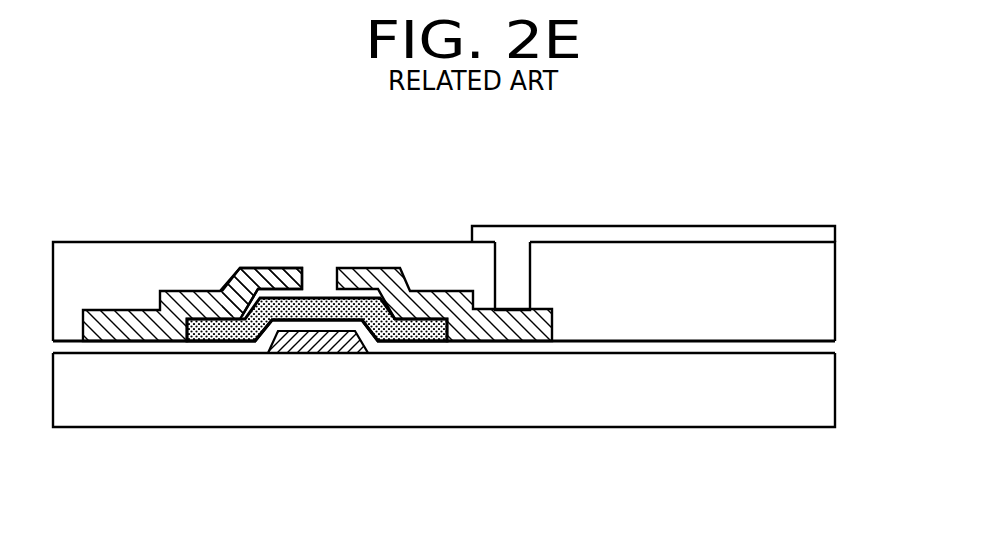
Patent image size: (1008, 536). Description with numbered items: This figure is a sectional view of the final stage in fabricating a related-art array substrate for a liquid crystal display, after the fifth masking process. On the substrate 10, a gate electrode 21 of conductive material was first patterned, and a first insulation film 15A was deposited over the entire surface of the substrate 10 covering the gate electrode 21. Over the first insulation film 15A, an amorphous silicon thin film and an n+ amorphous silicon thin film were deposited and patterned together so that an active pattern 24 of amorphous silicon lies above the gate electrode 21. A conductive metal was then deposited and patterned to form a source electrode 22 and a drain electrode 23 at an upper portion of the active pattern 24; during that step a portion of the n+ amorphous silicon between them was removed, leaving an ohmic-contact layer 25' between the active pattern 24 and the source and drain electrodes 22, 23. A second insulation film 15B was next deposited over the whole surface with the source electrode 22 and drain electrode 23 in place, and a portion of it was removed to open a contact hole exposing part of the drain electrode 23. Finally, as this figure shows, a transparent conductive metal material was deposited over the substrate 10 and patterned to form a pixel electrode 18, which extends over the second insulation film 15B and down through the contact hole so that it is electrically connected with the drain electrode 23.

The substrate 10 is at (834, 390).
The first insulation film 15A is at (834, 347).
The second insulation film 15B is at (834, 282).
The pixel electrode 18 is at (834, 233).
The gate electrode 21 is at (317, 353).
The source electrode 22 is at (272, 275).
The drain electrode 23 is at (368, 275).
The active pattern 24 is at (212, 335).
The ohmic-contact layer 25' is at (317, 263).